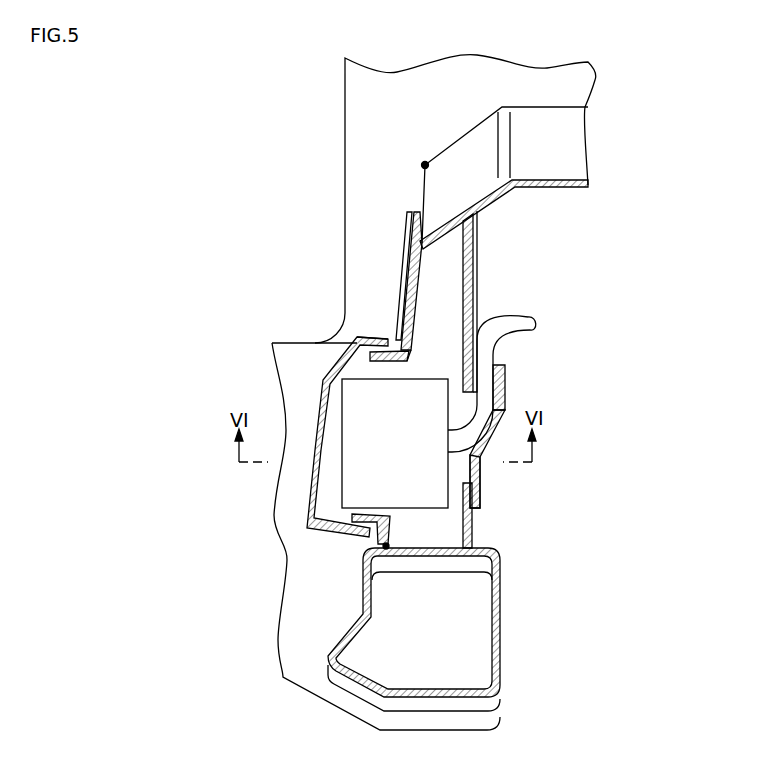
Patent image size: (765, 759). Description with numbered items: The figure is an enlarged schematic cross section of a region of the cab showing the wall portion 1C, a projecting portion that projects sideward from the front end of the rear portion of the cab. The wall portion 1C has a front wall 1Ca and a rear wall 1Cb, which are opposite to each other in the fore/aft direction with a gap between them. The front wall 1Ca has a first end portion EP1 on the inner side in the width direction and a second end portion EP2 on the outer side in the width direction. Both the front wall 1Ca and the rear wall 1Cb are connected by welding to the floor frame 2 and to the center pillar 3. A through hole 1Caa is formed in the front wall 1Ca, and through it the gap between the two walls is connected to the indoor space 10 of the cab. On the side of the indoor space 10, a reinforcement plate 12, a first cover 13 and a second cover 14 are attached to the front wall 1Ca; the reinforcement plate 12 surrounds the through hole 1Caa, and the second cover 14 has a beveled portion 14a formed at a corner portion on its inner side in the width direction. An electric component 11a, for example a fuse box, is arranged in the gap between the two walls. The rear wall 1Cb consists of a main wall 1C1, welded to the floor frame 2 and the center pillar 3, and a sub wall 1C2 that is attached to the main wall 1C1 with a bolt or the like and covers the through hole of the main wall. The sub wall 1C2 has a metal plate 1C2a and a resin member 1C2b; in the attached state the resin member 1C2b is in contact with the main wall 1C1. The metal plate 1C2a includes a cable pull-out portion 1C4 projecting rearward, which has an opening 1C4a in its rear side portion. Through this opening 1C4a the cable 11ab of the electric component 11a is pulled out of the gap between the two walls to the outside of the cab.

The floor frame 2 is at (302, 600).
The center pillar 3 is at (470, 703).
The indoor space 10 is at (295, 387).
The electric component 11a is at (353, 484).
The cable 11ab is at (522, 322).
The reinforcement plate 12 is at (413, 228).
The first cover 13 is at (403, 267).
The second cover 14 is at (304, 428).
The beveled portion 14a is at (347, 350).
The wall portion 1C is at (436, 333).
The main wall 1C1 is at (472, 238).
The sub wall 1C2 is at (546, 501).
The metal plate 1C2a is at (478, 490).
The resin member 1C2b is at (471, 512).
The cable pull-out portion 1C4 is at (536, 424).
The opening 1C4a is at (495, 372).
The front wall 1Ca is at (412, 310).
The through hole 1Caa is at (412, 355).
The rear wall 1Cb is at (470, 323).
The first end portion EP1 is at (425, 165).
The second end portion EP2 is at (383, 547).